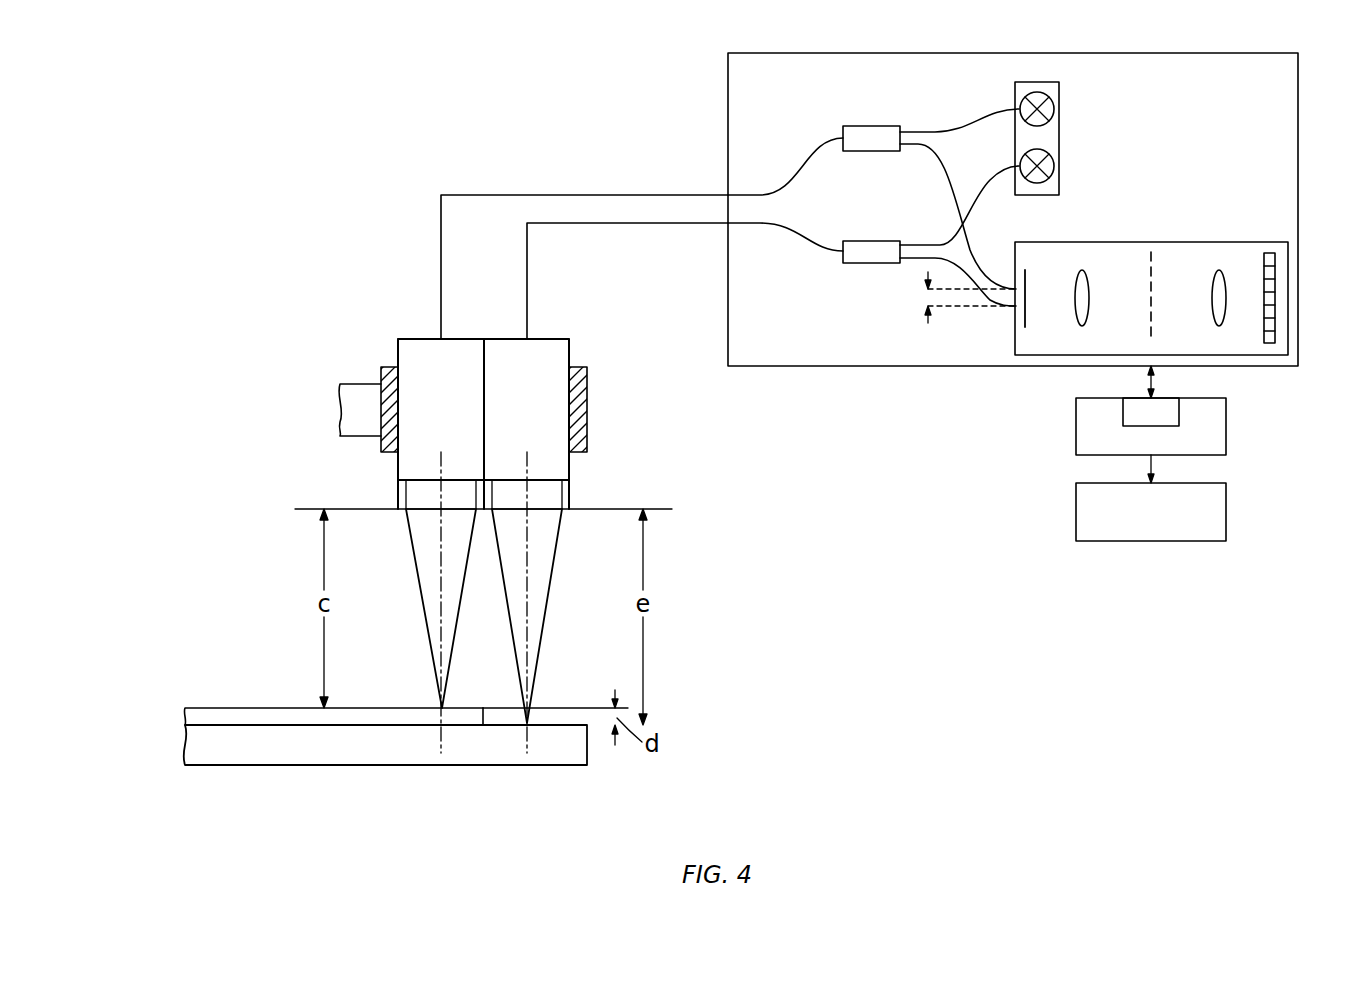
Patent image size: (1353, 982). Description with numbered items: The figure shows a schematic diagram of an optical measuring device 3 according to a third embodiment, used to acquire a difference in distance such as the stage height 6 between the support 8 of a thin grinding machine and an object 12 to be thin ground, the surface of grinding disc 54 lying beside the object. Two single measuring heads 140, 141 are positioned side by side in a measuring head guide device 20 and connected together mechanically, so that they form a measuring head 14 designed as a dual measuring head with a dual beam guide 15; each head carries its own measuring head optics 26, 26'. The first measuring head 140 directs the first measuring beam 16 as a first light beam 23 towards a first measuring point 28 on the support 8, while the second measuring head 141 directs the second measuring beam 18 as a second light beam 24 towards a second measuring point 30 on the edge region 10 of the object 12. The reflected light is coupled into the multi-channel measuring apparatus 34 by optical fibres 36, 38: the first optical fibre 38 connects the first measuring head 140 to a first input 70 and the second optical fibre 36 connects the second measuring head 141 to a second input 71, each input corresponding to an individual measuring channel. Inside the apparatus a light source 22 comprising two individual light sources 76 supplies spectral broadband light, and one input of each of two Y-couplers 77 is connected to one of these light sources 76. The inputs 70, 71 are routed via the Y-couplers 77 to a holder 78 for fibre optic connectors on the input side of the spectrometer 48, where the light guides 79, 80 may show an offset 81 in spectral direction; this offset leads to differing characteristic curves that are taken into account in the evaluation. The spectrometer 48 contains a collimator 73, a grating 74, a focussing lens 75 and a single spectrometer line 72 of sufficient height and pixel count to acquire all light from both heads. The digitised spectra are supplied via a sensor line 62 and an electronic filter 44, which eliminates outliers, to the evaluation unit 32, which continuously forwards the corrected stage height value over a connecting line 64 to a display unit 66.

The optical measuring device 3 is at (349, 241).
The measuring head 14 is at (570, 334).
The single measuring head 141 is at (405, 352).
The single measuring head 140 is at (566, 352).
The optical fibre 36 is at (440, 268).
The optical fibre 38 is at (528, 268).
The measuring head guide device 20 is at (578, 412).
The measuring head optics 26' is at (405, 489).
The measuring head optics 26 is at (557, 489).
The second measuring beam 18 is at (421, 553).
The first measuring beam 16 is at (546, 553).
The dual beam guide 15 is at (534, 607).
The second light beam 24 is at (441, 706).
The first light beam 23 is at (528, 721).
The second measuring point 30 is at (441, 712).
The first measuring point 28 is at (527, 727).
The object 12 is at (256, 713).
The edge region 10 is at (467, 703).
The surface of grinding disc 54 is at (565, 719).
The stage height 6 is at (486, 722).
The support 8 is at (256, 763).
The multi-channel measuring apparatus 34 is at (1013, 209).
The multi-channel measuring apparatus input 71 is at (720, 190).
The multi-channel measuring apparatus input 70 is at (720, 227).
The Y-coupler 77 is at (873, 127).
The light guide 80 is at (935, 260).
The offset in spectral direction 81 is at (953, 297).
The light guide 79 is at (985, 271).
The holder for fibre optic connectors 78 is at (1023, 318).
The light source 22 is at (1060, 85).
The light source 76 is at (1054, 110).
The spectrometer 48 is at (1130, 242).
The collimator 73 is at (1083, 270).
The grating 74 is at (1155, 266).
The focussing lens 75 is at (1222, 270).
The spectrometer line 72 is at (1270, 253).
The sensor line 62 is at (1146, 382).
The electronic filter 44 is at (1168, 402).
The evaluation unit 32 is at (1220, 425).
The connecting line 64 is at (1146, 468).
The display unit 66 is at (1220, 512).